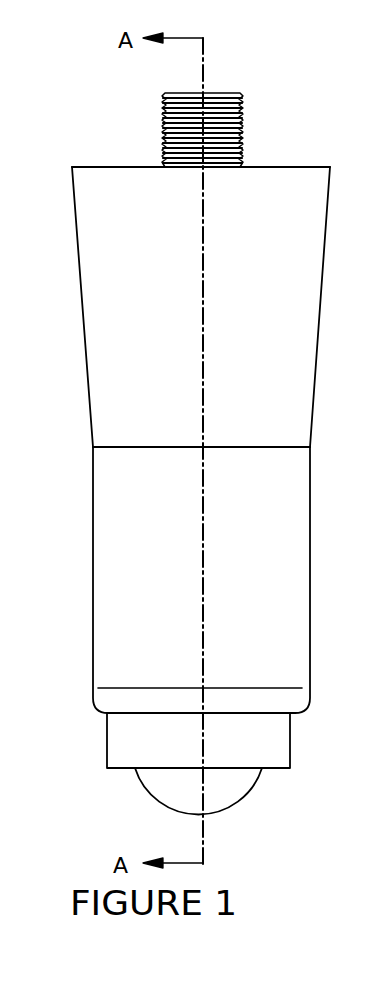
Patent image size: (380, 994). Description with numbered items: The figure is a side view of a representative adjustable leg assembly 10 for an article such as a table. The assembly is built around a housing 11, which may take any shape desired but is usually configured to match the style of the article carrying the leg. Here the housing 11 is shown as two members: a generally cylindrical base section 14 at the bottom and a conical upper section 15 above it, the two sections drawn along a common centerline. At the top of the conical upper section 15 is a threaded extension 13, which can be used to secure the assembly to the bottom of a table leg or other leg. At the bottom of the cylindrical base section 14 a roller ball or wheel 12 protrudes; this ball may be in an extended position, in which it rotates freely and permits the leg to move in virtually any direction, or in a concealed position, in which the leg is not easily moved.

The adjustable leg assembly 10 is at (199, 440).
The housing 11 is at (317, 350).
The roller ball or wheel 12 is at (140, 787).
The threaded extension 13 is at (162, 108).
The cylindrical base section 14 is at (88, 627).
The conical upper section 15 is at (84, 313).